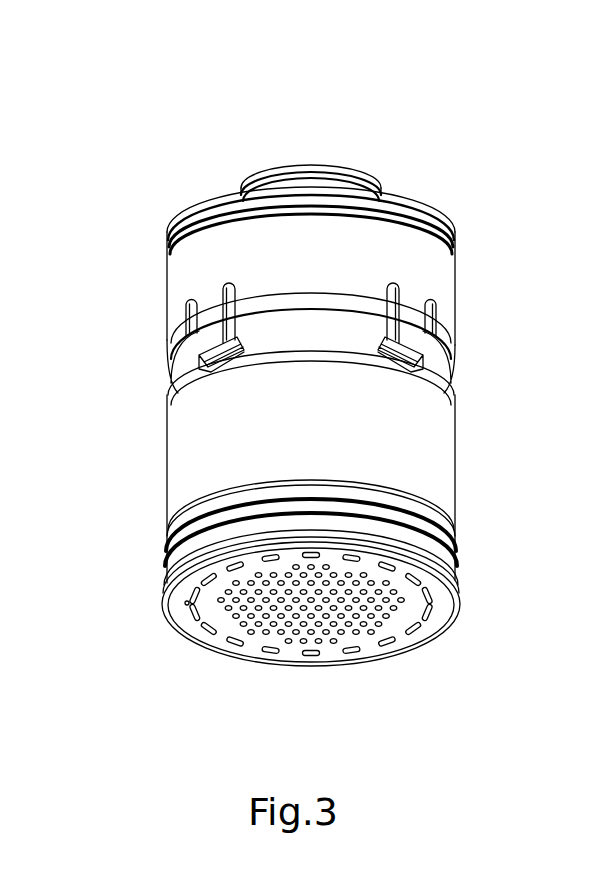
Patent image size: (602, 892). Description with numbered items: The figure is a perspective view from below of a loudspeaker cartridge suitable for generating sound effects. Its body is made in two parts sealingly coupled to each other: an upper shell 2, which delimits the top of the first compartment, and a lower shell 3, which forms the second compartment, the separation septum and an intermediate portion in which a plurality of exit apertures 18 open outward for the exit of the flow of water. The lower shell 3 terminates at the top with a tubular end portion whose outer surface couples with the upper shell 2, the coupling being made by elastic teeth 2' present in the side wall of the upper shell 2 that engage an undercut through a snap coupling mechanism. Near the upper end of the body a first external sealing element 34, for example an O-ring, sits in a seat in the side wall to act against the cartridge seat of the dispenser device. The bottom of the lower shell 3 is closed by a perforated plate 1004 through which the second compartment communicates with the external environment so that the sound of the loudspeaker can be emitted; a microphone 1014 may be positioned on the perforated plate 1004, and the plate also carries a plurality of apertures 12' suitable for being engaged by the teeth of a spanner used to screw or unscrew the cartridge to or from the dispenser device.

The upper shell 2 is at (291, 246).
The first external sealing element 34 is at (453, 243).
The elastic teeth 2' is at (381, 296).
The exit aperture 18 is at (228, 357).
The lower shell 3 is at (223, 447).
The perforated plate 1004 is at (447, 608).
The microphone 1014 is at (186, 606).
The apertures 12' is at (311, 655).